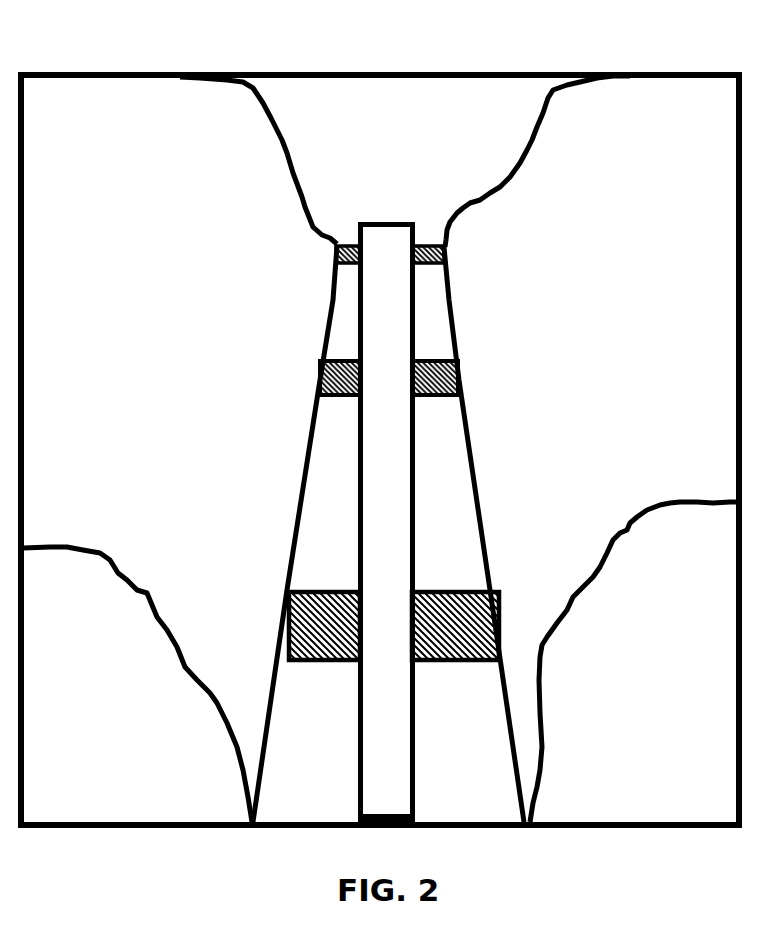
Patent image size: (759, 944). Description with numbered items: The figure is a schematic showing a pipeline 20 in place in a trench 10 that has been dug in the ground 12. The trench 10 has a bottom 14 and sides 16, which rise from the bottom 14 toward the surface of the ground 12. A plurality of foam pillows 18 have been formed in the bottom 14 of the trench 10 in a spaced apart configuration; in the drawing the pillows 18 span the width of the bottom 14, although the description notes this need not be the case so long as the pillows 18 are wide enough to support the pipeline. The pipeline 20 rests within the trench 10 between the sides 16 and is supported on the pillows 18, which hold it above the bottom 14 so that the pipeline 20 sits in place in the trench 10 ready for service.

The trench 10 is at (395, 160).
The ground 12 is at (109, 724).
The bottom 14 is at (322, 776).
The sides 16 is at (240, 446).
The pillows 18 is at (447, 588).
The pipeline 20 is at (358, 522).